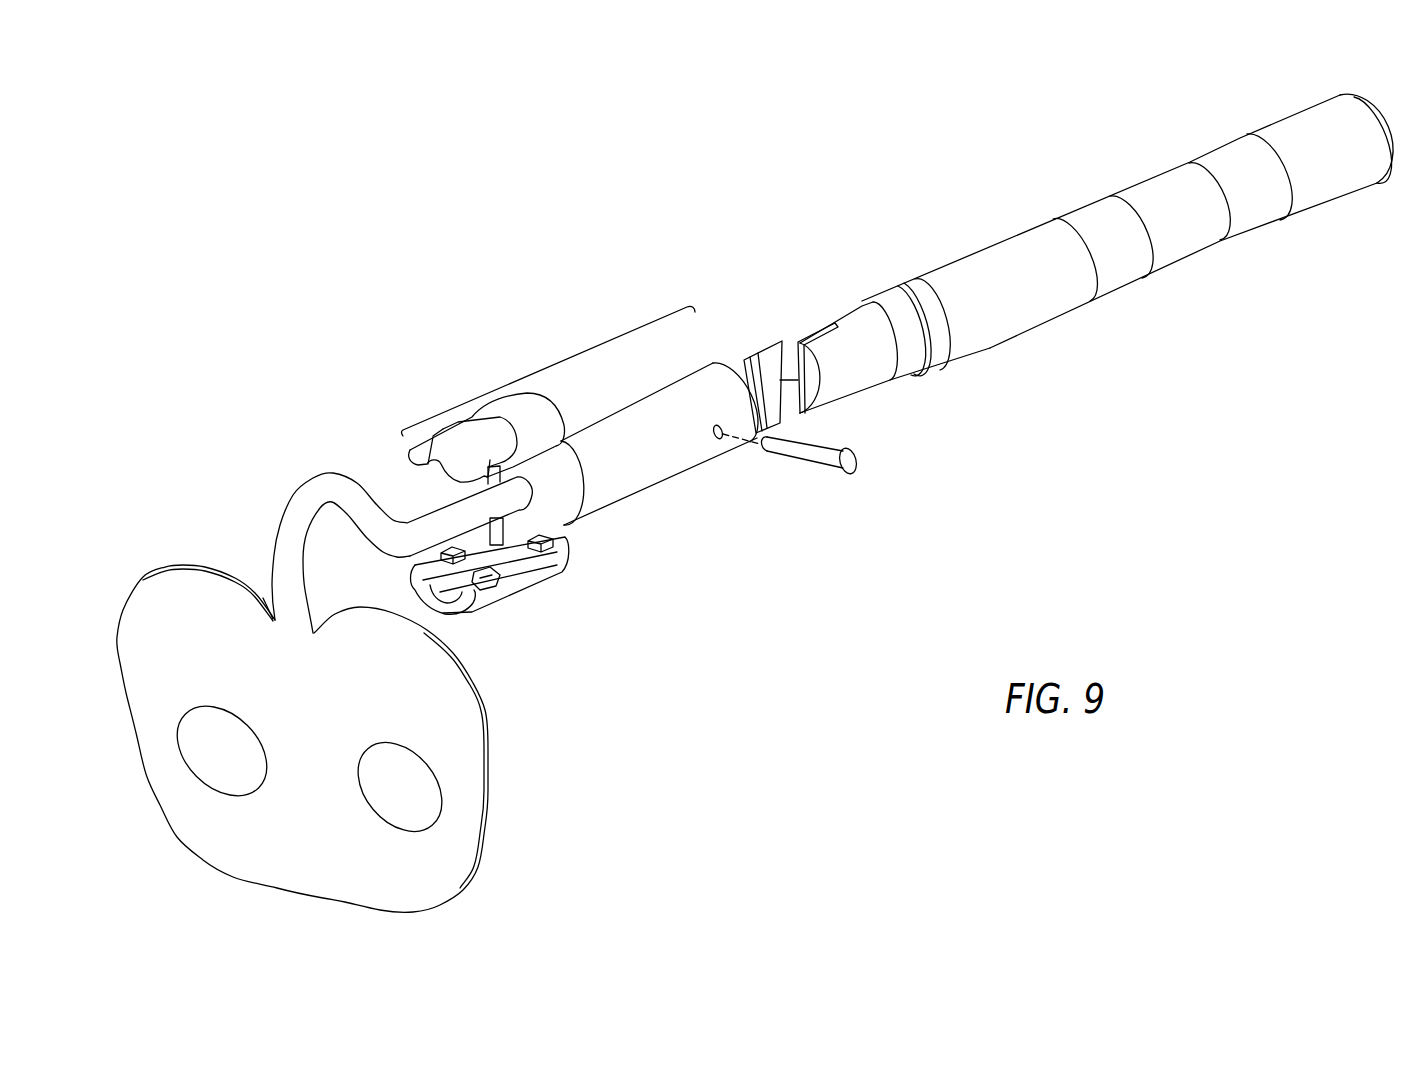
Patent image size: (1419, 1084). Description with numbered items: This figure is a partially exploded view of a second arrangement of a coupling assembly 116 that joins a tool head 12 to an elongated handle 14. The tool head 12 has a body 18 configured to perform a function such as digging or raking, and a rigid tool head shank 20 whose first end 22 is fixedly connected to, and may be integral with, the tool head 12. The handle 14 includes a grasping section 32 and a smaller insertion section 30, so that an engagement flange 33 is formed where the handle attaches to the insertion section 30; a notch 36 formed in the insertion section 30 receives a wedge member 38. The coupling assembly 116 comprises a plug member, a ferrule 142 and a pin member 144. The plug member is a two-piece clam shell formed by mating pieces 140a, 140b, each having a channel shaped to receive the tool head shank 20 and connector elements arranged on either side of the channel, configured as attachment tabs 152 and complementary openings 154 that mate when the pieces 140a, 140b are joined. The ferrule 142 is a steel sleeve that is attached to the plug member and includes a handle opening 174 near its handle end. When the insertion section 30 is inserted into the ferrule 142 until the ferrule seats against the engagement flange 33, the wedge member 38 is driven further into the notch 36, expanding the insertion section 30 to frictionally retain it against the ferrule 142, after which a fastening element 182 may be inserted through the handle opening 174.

The tool head 12 is at (364, 701).
The elongated handle 14 is at (1040, 270).
The body 18 is at (448, 853).
The tool head shank 20 is at (427, 522).
The first end 22 is at (286, 593).
The insertion section 30 is at (855, 396).
The grasping section 32 is at (1014, 325).
The engagement flange 33 is at (875, 300).
The notch 36 is at (817, 321).
The wedge member 38 is at (752, 350).
The coupling assembly 116 is at (557, 365).
The mating piece 140a is at (548, 390).
The mating piece 140b is at (539, 589).
The ferrule 142 is at (671, 452).
The pin member 144 is at (522, 540).
The attachment tab 152 is at (563, 557).
The opening 154 is at (500, 580).
The handle opening 174 is at (720, 440).
The fastening element 182 is at (857, 467).